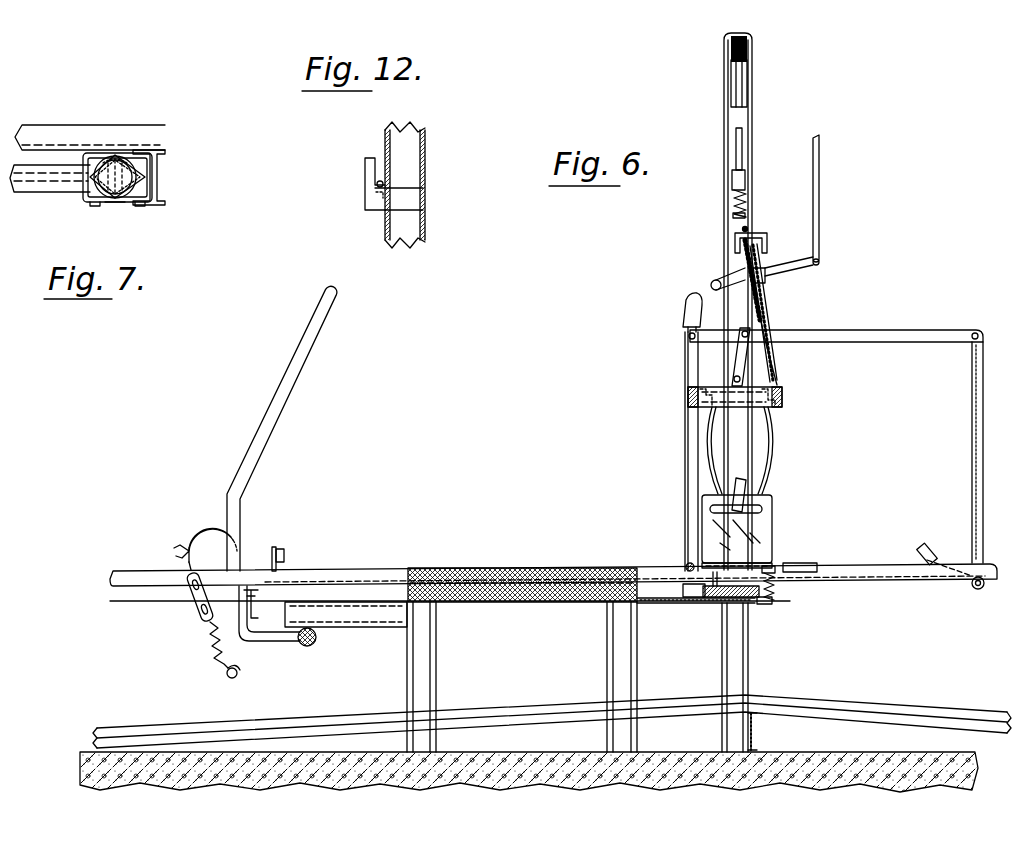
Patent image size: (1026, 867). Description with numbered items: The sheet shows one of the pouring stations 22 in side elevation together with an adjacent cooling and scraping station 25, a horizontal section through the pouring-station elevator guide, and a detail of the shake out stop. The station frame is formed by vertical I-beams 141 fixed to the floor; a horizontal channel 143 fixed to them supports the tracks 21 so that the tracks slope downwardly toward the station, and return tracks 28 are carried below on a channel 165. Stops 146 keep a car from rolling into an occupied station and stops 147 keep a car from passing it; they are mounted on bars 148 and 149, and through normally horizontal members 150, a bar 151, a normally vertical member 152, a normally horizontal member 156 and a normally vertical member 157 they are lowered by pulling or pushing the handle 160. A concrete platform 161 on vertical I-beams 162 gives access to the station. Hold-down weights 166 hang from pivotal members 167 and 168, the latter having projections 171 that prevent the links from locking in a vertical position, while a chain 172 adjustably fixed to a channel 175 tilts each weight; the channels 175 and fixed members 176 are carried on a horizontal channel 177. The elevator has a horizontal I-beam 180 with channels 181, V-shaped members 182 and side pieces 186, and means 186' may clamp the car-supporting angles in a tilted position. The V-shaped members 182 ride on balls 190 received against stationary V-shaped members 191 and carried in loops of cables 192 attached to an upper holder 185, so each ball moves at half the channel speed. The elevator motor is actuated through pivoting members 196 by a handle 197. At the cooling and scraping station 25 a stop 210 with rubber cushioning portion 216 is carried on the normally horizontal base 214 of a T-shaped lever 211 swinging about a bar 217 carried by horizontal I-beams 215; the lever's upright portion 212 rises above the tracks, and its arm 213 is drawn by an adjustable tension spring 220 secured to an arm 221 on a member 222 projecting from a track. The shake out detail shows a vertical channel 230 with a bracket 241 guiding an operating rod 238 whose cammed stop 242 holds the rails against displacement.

In FIG. 6, the tracks 21 is at (864, 569).
In FIG. 6, the pouring station 22 is at (847, 282).
In FIG. 6, the cooling and scraping station 25 is at (333, 329).
In FIG. 6, the return tracks 28 is at (331, 723).
In FIG. 7, the vertical I-beams 141 is at (160, 186).
In FIG. 6, the vertical I-beams 141 is at (736, 676).
In FIG. 6, the horizontal channel 143 is at (769, 599).
In FIG. 6, the stops 146 is at (928, 545).
In FIG. 6, the stops 147 is at (688, 566).
In FIG. 6, the bar 148 is at (980, 590).
In FIG. 6, the bar 149 is at (742, 605).
In FIG. 6, the normally horizontal members 150 is at (713, 600).
In FIG. 6, the bar 151 is at (697, 600).
In FIG. 6, the normally vertical member 152 is at (688, 442).
In FIG. 6, the normally horizontal member 156 is at (925, 331).
In FIG. 6, the normally vertical member 157 is at (977, 425).
In FIG. 6, the handle 160 is at (683, 302).
In FIG. 6, the concrete platform 161 is at (501, 603).
In FIG. 6, the vertical I-beams 162 is at (428, 678).
In FIG. 6, the channel 165 is at (757, 740).
In FIG. 6, the weights 166 is at (689, 397).
In FIG. 6, the pivotal members 167 is at (749, 356).
In FIG. 6, the pivotal members 168 is at (754, 308).
In FIG. 6, the projection 171 is at (766, 323).
In FIG. 6, the chain or flexible link 172 is at (771, 372).
In FIG. 6, the channels 175 is at (760, 238).
In FIG. 6, the fixed members 176 is at (746, 258).
In FIG. 7, the horizontal channel 177 is at (145, 132).
In FIG. 6, the horizontal channel 177 is at (762, 257).
In FIG. 7, the horizontal I-beam 180 is at (60, 185).
In FIG. 6, the horizontal I-beam 180 is at (745, 206).
In FIG. 7, the channels 181 is at (98, 206).
In FIG. 7, the V-shaped members 182 is at (120, 200).
In FIG. 6, the upper holder 185 is at (710, 386).
In FIG. 6, the side pieces 186 is at (763, 531).
In FIG. 6, the clamping means 186' is at (694, 489).
In FIG. 7, the balls 190 is at (110, 165).
In FIG. 7, the V-shaped members 191 is at (148, 168).
In FIG. 7, the ropes or cables 192 is at (120, 155).
In FIG. 6, the ropes or cables 192 is at (706, 426).
In FIG. 6, the pivoting members 196 is at (819, 214).
In FIG. 6, the handle 197 is at (712, 283).
In FIG. 6, the stop 210 is at (284, 548).
In FIG. 6, the T-shaped lever 211 is at (228, 493).
In FIG. 6, the lever handle 212 is at (338, 297).
In FIG. 6, the arm 213 is at (238, 671).
In FIG. 6, the normally horizontal base 214 is at (271, 639).
In FIG. 6, the horizontal I-beams 215 is at (372, 617).
In FIG. 6, the rubber cushioning portion 216 is at (288, 556).
In FIG. 6, the bar 217 is at (316, 641).
In FIG. 6, the adjustable tension spring 220 is at (214, 648).
In FIG. 6, the arm 221 is at (200, 538).
In FIG. 6, the member 222 is at (255, 607).
In FIG. 12, the vertical channels 230 is at (425, 165).
In FIG. 12, the operating rod 238 is at (380, 180).
In FIG. 12, the bracket 241 is at (410, 201).
In FIG. 12, the stop 242 is at (382, 196).